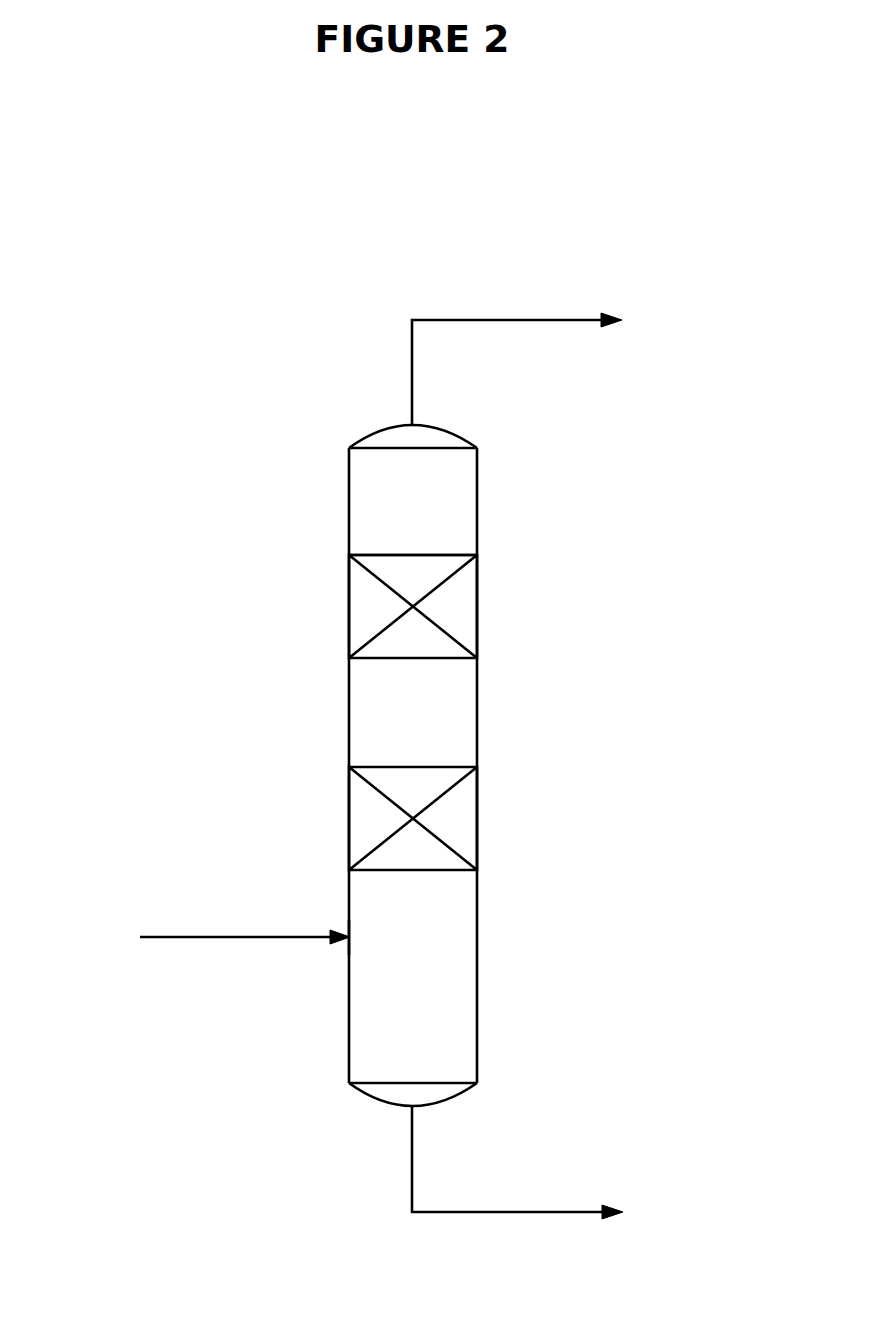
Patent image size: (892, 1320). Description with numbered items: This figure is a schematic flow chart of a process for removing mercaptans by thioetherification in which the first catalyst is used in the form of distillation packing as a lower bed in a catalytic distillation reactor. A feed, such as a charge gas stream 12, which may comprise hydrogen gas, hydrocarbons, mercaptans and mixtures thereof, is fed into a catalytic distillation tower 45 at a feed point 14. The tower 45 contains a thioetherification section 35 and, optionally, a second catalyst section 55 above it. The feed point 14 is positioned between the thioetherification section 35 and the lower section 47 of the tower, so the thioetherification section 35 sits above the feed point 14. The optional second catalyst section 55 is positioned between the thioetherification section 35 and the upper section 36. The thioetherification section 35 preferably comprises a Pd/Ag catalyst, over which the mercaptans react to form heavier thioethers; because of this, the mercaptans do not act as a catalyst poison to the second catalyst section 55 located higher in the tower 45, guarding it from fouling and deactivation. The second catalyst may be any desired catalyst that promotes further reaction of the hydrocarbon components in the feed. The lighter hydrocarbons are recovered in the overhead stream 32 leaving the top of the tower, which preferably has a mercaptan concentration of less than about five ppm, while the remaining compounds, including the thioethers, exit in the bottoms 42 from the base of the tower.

The charge gas stream 12 is at (215, 937).
The feed point 14 is at (321, 959).
The overhead stream 32 is at (517, 341).
The thioetherification section 35 is at (497, 765).
The upper section 36 is at (413, 490).
The bottoms 42 is at (517, 1193).
The catalytic distillation tower 45 is at (628, 445).
The lower section 47 is at (413, 1072).
The second catalyst section 55 is at (497, 553).